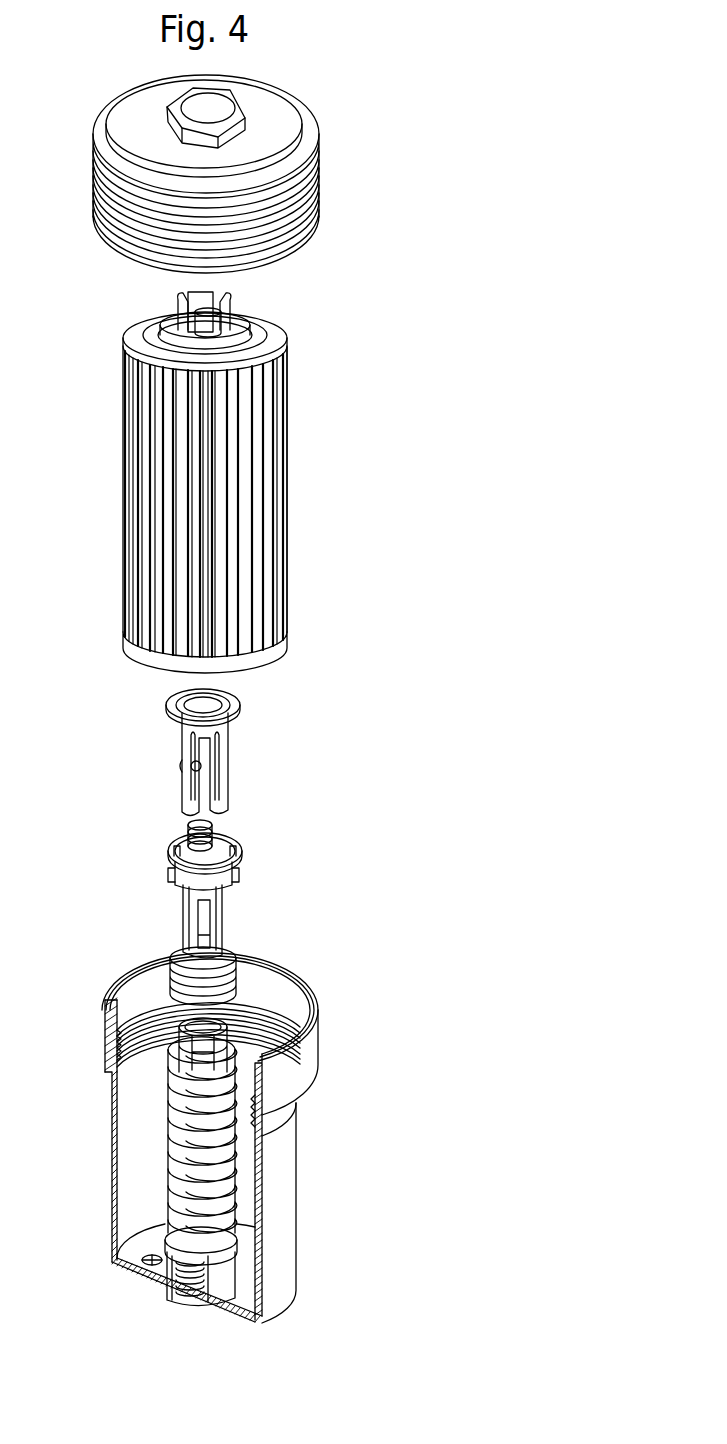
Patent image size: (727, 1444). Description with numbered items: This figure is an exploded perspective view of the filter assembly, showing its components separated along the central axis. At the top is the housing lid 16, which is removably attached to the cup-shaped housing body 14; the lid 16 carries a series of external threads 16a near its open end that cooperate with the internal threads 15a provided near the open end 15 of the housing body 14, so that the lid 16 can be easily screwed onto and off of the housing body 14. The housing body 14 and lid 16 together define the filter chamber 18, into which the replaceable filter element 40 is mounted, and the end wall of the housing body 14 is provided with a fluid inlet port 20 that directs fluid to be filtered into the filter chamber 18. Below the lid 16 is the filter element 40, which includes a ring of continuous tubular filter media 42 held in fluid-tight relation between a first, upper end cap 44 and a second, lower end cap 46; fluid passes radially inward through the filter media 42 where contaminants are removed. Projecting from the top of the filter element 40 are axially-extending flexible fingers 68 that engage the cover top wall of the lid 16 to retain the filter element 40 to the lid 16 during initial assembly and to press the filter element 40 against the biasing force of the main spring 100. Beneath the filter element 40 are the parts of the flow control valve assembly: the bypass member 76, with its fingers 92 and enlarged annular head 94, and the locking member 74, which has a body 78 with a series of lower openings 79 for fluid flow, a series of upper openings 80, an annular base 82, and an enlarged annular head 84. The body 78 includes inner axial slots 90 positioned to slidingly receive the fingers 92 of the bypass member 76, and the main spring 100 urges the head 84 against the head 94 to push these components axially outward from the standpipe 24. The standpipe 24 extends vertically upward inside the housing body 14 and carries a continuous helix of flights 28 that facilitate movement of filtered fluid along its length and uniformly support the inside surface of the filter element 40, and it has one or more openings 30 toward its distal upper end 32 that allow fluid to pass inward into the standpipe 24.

The housing lid 16 is at (320, 152).
The external threads 16a is at (98, 226).
The fingers 68 is at (178, 302).
The first end cap 44 is at (274, 337).
The filter media 42 is at (172, 465).
The filter element 40 is at (283, 487).
The second end cap 46 is at (272, 647).
The bypass member 76 is at (202, 752).
The enlarged annular head 94 is at (172, 706).
The fingers 92 is at (222, 785).
The inner axial channels or slots 90 is at (222, 842).
The enlarged annular head 84 is at (188, 832).
The locking member 74 is at (208, 869).
The upper openings 80 is at (176, 878).
The body 78 is at (188, 920).
The lower openings 79 is at (212, 940).
The annular base 82 is at (172, 975).
The open end 15 is at (285, 988).
The main spring 100 is at (108, 1004).
The internal threads 15a is at (112, 1058).
The filter chamber 18 is at (128, 1100).
The openings 30 is at (266, 1072).
The housing body 14 is at (203, 1129).
The distal end 32 is at (230, 1025).
The standpipe 24 is at (201, 1171).
The flights 28 is at (228, 1162).
The fluid inlet port 20 is at (152, 1266).